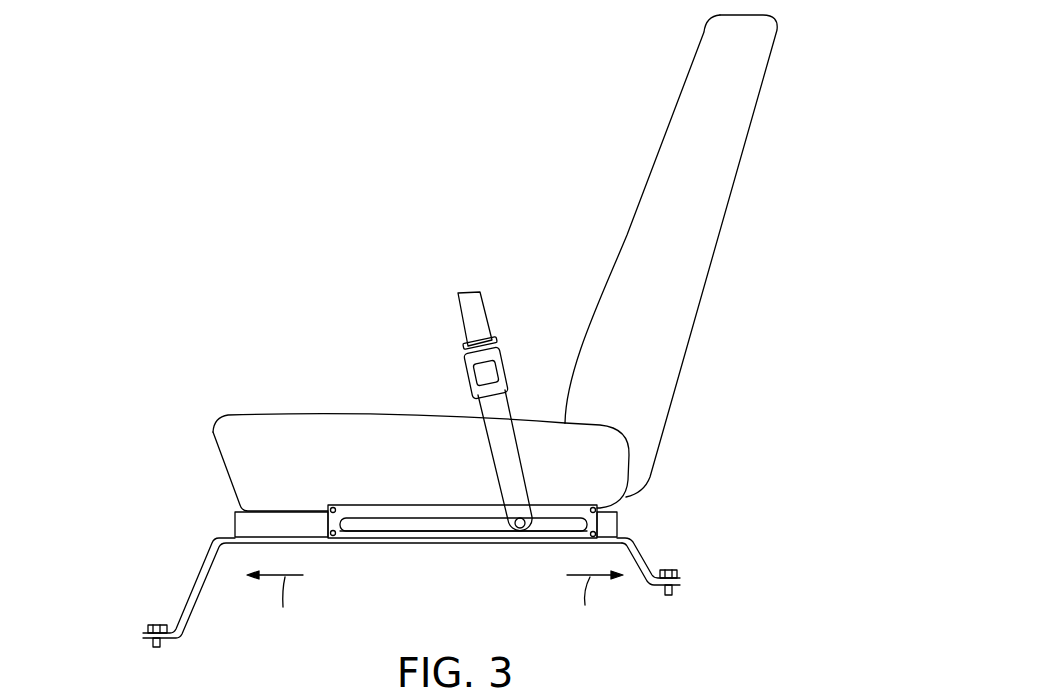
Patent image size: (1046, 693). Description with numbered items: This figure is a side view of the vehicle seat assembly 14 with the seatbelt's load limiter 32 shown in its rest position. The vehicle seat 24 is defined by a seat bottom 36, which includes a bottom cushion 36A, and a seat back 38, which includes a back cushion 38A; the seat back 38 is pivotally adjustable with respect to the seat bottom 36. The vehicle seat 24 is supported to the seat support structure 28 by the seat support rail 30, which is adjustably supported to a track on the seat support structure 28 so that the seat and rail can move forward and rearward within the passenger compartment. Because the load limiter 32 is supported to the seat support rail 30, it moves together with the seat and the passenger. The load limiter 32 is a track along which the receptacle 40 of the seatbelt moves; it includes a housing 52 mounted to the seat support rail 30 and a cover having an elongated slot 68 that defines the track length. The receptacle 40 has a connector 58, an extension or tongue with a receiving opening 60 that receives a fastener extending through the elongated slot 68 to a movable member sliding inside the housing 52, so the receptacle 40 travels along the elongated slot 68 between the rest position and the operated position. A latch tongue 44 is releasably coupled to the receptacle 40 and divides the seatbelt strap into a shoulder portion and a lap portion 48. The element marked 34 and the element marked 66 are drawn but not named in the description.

The vehicle seat assembly 14 is at (303, 108).
The vehicle seat 24 is at (752, 255).
The seat support structure 28 is at (197, 580).
The seat support rail 30 is at (245, 522).
The load limiter 32 is at (423, 556).
The fastener 34 is at (155, 625).
The seat bottom 36 is at (260, 406).
The bottom cushion 36A is at (347, 413).
The seat back 38 is at (752, 148).
The back cushion 38A is at (648, 176).
The receptacle 40 is at (518, 361).
The latch tongue 44 is at (462, 348).
The lap portion 48 is at (475, 312).
The housing 52 is at (368, 540).
The connector 58 is at (528, 467).
The receiving opening 60 is at (522, 528).
The slot lower edge 66 is at (478, 540).
The elongated slot 68 is at (397, 518).